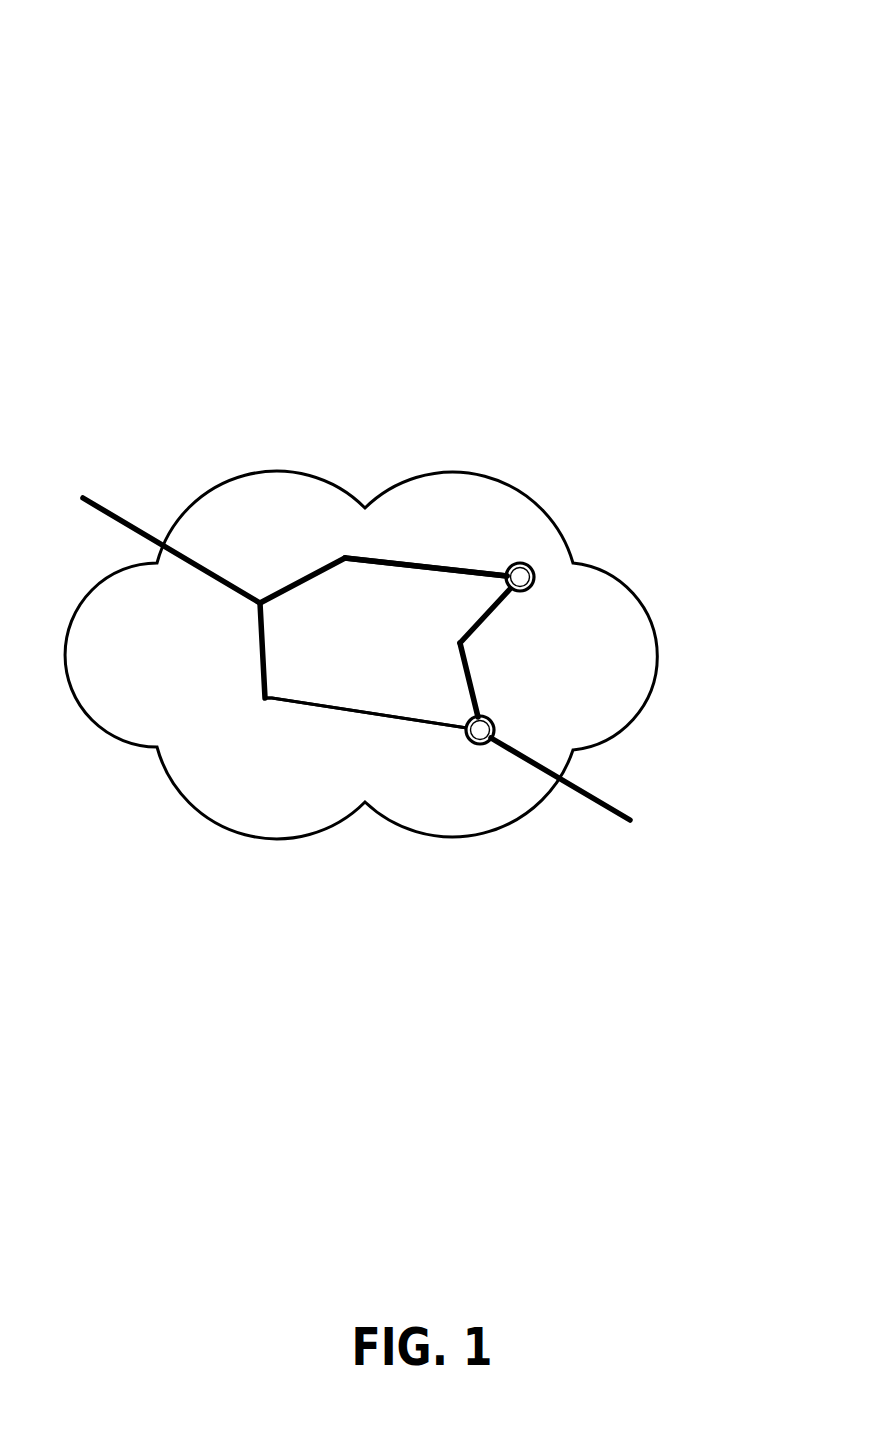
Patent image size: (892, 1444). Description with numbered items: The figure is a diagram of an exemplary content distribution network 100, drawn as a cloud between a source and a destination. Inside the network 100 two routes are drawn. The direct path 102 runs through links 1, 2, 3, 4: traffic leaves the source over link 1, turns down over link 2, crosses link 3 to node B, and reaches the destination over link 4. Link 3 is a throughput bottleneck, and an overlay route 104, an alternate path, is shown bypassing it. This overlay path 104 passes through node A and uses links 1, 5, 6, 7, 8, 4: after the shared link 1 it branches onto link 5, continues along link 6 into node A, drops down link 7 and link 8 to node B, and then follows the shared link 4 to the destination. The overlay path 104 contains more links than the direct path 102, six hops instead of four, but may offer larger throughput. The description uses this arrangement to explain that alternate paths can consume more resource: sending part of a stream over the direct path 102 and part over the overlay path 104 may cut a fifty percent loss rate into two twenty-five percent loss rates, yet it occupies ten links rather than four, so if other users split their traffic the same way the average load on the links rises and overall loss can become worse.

The network 100 is at (370, 40).
The direct path 102 is at (282, 695).
The overlay route 104 is at (387, 557).
The link 1 is at (171, 550).
The link 2 is at (250, 650).
The link 3 is at (366, 723).
The link 4 is at (560, 774).
The link 5 is at (302, 584).
The link 6 is at (426, 582).
The link 7 is at (488, 616).
The link 8 is at (478, 680).